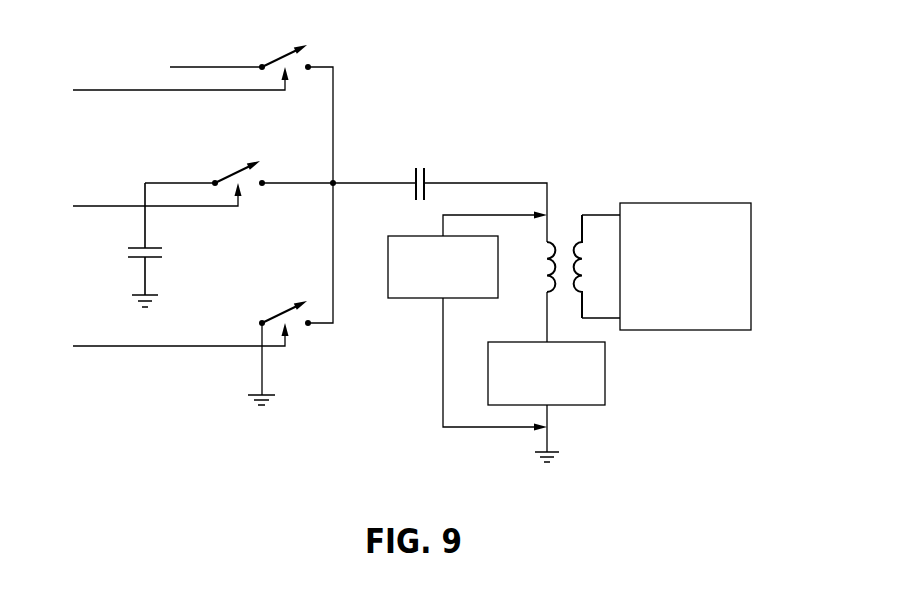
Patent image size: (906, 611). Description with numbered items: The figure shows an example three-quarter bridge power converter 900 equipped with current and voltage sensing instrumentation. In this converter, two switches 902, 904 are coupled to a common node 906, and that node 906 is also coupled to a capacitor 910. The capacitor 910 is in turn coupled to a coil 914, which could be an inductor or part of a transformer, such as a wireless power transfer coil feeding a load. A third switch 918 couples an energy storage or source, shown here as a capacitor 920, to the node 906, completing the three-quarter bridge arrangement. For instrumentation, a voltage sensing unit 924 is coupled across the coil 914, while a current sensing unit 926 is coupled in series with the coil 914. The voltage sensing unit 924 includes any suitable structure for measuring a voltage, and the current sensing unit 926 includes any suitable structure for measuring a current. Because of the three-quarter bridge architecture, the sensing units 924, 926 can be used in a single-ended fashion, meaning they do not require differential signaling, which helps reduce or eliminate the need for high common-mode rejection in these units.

The three-quarter bridge power converter 900 is at (657, 72).
The switch 902 is at (283, 55).
The switch 904 is at (282, 308).
The node 906 is at (330, 187).
The capacitor 910 is at (427, 173).
The coil 914 is at (565, 229).
The switch 918 is at (237, 175).
The capacitor 920 is at (157, 258).
The voltage sensing unit 924 is at (410, 301).
The current sensing unit 926 is at (585, 408).